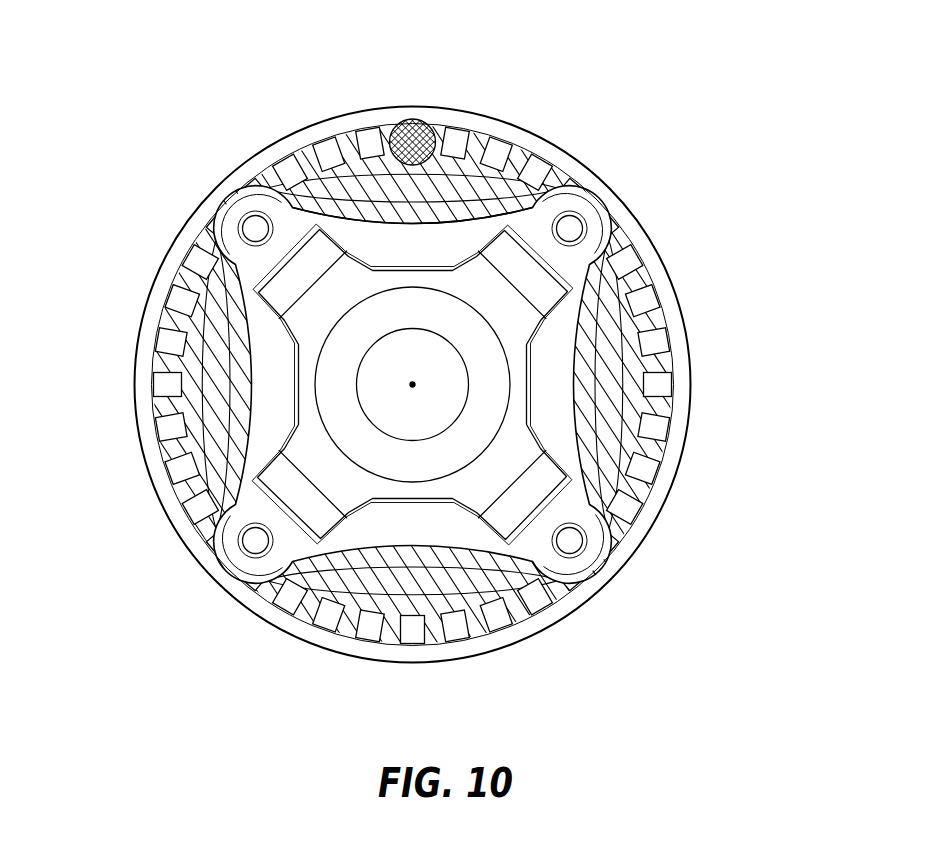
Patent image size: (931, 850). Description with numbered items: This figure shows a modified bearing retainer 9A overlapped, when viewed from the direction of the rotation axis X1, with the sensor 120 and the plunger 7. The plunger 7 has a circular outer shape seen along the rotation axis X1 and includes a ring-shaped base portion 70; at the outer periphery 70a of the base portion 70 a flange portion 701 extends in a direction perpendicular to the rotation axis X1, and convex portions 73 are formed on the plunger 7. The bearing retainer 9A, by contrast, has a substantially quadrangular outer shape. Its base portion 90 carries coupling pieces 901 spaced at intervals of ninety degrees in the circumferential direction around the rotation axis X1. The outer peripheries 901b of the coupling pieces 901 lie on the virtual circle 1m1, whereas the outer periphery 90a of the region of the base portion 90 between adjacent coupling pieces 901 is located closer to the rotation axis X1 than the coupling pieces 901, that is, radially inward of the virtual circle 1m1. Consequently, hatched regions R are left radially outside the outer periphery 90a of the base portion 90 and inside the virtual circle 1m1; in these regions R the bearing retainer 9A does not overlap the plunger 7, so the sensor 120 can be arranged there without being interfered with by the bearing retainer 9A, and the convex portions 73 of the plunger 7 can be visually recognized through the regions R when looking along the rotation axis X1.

The plunger 7 is at (456, 385).
The base portion 70 is at (683, 479).
The outer periphery 70a is at (648, 256).
The flange portion 701 is at (645, 533).
The convex portions 73 is at (325, 142).
The bearing retainer 9A is at (590, 303).
The base portion 90 is at (262, 340).
The outer periphery 90a is at (384, 216).
The coupling pieces 901 is at (583, 228).
The outer peripheries 901b is at (245, 192).
The virtual circle 1m1 is at (668, 374).
The regions R is at (156, 392).
The rotation axis X1 is at (416, 388).
The sensor 120 is at (406, 118).